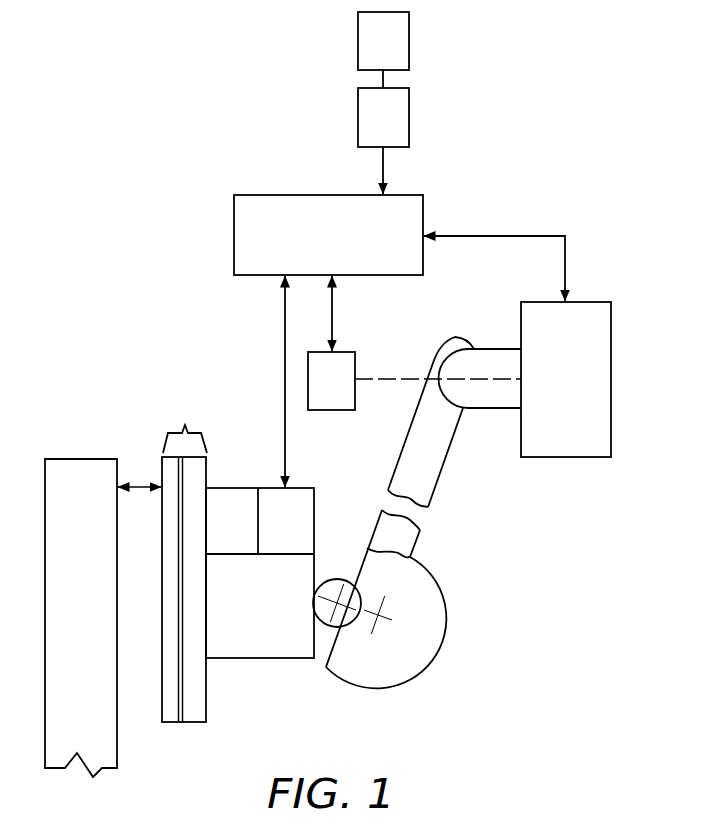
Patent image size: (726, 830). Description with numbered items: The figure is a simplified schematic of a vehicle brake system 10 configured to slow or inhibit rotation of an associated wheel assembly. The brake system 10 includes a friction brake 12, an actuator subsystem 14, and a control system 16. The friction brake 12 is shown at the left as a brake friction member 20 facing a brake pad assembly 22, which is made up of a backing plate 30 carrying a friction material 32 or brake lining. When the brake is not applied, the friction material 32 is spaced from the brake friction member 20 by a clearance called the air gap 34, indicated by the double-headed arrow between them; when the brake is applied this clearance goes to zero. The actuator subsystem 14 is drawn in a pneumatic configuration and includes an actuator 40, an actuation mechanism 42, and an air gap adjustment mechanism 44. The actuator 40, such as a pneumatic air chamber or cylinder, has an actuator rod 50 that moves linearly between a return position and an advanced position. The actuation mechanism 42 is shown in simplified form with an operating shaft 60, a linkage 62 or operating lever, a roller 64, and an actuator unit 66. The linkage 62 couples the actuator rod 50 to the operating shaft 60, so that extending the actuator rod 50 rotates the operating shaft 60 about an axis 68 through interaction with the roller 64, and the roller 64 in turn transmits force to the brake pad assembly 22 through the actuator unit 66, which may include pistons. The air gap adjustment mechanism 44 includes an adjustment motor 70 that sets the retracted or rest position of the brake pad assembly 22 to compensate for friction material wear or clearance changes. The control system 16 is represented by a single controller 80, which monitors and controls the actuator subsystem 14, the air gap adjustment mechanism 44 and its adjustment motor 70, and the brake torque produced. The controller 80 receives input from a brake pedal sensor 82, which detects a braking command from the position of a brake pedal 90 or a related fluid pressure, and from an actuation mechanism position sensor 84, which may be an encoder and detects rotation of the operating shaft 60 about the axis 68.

The brake system 10 is at (188, 180).
The friction brake 12 is at (108, 782).
The actuator subsystem 14 is at (428, 680).
The control system 16 is at (292, 180).
The brake friction member 20 is at (84, 615).
The brake pad assembly 22 is at (185, 425).
The backing plate 30 is at (187, 722).
The friction material 32 is at (172, 722).
The air gap 34 is at (140, 483).
The actuator 40 is at (569, 387).
The actuation mechanism 42 is at (316, 666).
The air gap adjustment mechanism 44 is at (258, 486).
The actuator rod 50 is at (496, 348).
The operating shaft 60 is at (447, 633).
The linkage 62 is at (421, 547).
The roller 64 is at (334, 578).
The actuator unit 66 is at (263, 615).
The axis 68 is at (387, 610).
The adjustment motor 70 is at (291, 533).
The controller 80 is at (333, 245).
The brake pedal sensor 82 is at (389, 132).
The actuation mechanism position sensor 84 is at (334, 392).
The brake pedal 90 is at (389, 55).